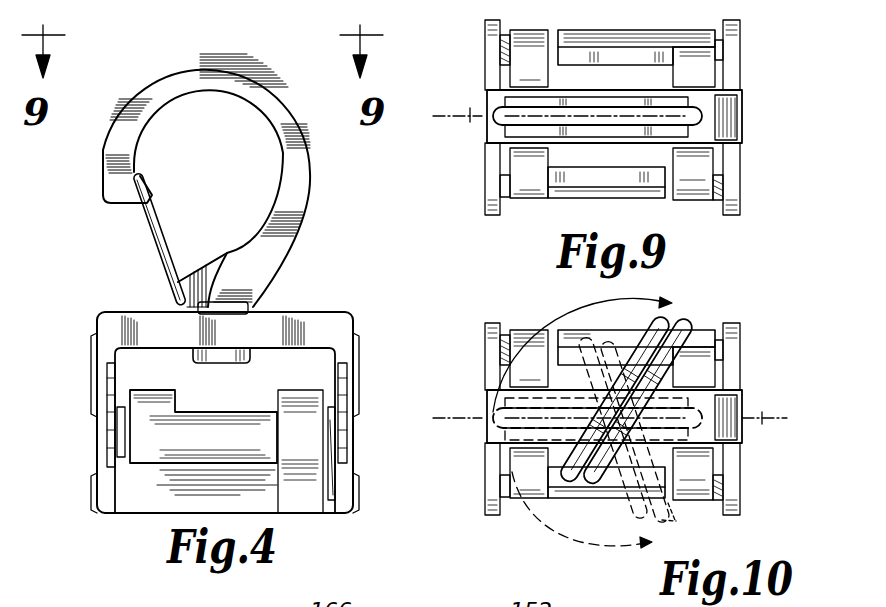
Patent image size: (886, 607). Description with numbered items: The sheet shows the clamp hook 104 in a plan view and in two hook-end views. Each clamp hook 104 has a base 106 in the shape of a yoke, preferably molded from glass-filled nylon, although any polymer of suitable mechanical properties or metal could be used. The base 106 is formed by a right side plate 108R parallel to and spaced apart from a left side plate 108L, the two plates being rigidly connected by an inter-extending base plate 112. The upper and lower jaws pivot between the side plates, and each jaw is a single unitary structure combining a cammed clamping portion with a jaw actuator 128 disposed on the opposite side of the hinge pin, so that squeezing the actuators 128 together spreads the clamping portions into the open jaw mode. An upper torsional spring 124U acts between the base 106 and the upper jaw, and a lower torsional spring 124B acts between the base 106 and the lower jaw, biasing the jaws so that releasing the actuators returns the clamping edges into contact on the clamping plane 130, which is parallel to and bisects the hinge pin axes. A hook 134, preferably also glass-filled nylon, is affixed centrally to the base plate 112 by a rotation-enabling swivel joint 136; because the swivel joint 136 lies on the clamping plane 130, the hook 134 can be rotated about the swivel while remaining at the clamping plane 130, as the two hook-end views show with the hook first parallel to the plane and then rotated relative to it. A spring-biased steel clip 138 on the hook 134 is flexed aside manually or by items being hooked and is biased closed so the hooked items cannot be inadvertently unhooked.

In FIG. 4, the clamp hook 104 is at (138, 240).
In FIG. 9, the clamp hook 104 is at (754, 118).
In FIG. 10, the clamp hook 104 is at (512, 307).
In FIG. 4, the base 106 is at (302, 308).
In FIG. 9, the base 106 is at (742, 192).
In FIG. 10, the base 106 is at (742, 437).
In FIG. 4, the left side plate 108L is at (358, 452).
In FIG. 9, the left side plate 108L is at (485, 78).
In FIG. 10, the left side plate 108L is at (483, 488).
In FIG. 4, the right side plate 108R is at (59, 462).
In FIG. 9, the right side plate 108R is at (742, 165).
In FIG. 10, the right side plate 108R is at (742, 352).
In FIG. 4, the base plate 112 is at (149, 280).
In FIG. 9, the base plate 112 is at (722, 110).
In FIG. 4, the lower torsional spring 124B is at (96, 417).
In FIG. 4, the upper torsional spring 124U is at (350, 428).
In FIG. 4, the jaw actuator 128 is at (203, 442).
In FIG. 9, the jaw actuator 128 is at (620, 30).
In FIG. 10, the jaw actuator 128 is at (612, 415).
In FIG. 9, the clamping plane 130 is at (470, 118).
In FIG. 10, the clamping plane 130 is at (763, 417).
In FIG. 4, the hook 134 is at (268, 127).
In FIG. 9, the hook 134 is at (553, 203).
In FIG. 10, the hook 134 is at (692, 313).
In FIG. 4, the swivel joint 136 is at (248, 364).
In FIG. 4, the spring-biased steel clip 138 is at (157, 220).